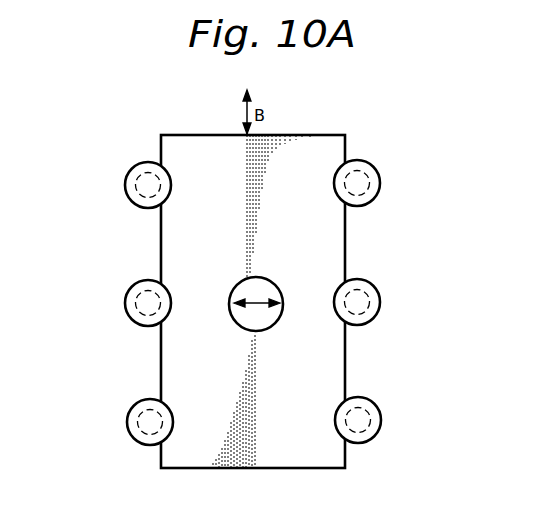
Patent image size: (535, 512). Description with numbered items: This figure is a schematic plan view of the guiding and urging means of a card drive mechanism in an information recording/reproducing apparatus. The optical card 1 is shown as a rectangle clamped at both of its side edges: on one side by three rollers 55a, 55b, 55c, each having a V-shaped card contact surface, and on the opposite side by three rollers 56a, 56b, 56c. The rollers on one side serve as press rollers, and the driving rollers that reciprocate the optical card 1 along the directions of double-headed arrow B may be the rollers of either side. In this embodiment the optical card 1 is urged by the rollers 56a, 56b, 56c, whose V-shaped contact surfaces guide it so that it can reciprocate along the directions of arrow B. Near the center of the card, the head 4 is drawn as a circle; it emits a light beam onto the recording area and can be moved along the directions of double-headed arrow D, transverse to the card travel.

The optical card 1 is at (280, 460).
The head 4 is at (268, 330).
The roller 55a is at (381, 423).
The roller 55b is at (380, 303).
The roller 55c is at (380, 183).
The roller 56a is at (128, 424).
The roller 56b is at (125, 303).
The roller 56c is at (125, 185).